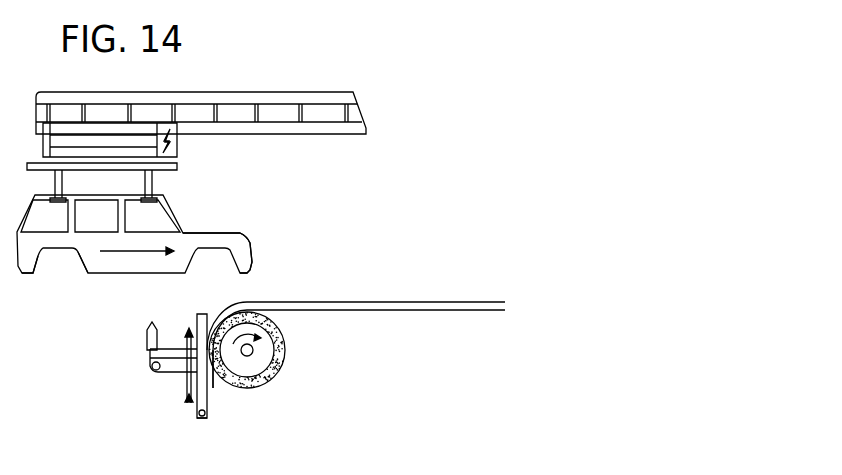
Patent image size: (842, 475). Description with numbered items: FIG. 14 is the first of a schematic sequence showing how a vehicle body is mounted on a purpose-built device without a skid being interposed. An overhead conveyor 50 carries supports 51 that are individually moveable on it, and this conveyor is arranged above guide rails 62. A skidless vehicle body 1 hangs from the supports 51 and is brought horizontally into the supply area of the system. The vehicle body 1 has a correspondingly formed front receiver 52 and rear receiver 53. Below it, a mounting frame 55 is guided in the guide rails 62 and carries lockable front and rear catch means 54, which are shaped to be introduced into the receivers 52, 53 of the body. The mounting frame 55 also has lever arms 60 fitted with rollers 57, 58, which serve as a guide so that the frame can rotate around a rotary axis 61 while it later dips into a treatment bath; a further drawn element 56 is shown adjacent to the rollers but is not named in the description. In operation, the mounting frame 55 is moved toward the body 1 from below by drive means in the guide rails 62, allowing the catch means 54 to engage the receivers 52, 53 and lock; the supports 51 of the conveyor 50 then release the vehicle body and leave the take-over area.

The conveyor 50 is at (305, 100).
The supports 51 is at (177, 151).
The vehicle body 1 is at (180, 225).
The front receiver 52 is at (207, 262).
The rear receiver 53 is at (80, 270).
The catch means 54 is at (147, 327).
The mounting frame 55 is at (150, 352).
The roller 56 is at (285, 355).
The roller 57 is at (206, 419).
The roller 58 is at (198, 314).
The lever arms 60 is at (192, 402).
The rotary axis 61 is at (213, 384).
The guide rails 62 is at (460, 305).